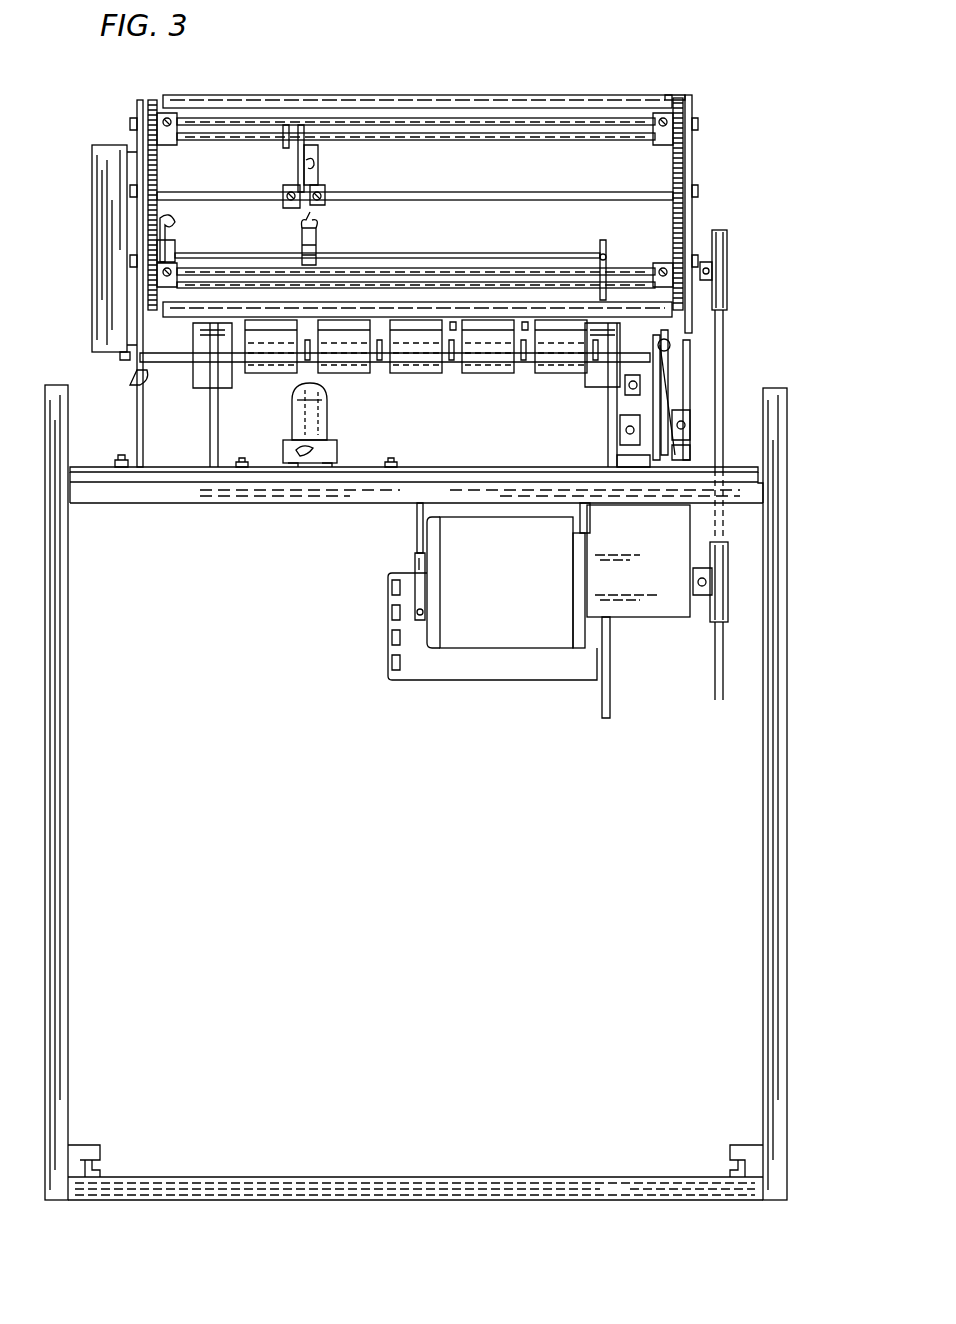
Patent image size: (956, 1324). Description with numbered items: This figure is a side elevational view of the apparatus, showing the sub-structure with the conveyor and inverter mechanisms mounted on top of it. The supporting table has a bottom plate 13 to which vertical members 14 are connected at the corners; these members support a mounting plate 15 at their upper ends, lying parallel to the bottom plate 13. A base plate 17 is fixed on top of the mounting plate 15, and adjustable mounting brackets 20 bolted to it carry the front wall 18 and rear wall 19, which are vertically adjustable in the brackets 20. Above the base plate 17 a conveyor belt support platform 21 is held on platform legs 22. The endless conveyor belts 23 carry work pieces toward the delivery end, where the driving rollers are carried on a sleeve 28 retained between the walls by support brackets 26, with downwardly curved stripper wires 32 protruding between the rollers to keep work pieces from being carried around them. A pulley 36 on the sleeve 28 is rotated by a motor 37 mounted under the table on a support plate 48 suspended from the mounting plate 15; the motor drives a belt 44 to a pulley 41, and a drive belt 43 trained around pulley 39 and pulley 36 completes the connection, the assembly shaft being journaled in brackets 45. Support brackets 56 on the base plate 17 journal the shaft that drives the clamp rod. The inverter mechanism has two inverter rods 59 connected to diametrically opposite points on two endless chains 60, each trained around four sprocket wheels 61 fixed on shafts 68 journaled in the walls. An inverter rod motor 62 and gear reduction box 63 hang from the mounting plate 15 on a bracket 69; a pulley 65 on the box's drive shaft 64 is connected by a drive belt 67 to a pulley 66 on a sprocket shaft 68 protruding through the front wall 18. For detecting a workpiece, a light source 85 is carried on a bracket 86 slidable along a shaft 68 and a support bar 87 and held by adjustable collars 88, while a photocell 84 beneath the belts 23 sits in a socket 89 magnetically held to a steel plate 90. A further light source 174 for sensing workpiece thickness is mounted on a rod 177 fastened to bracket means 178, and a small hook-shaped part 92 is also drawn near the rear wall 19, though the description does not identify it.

The bottom plate 13 is at (372, 1180).
The vertical members 14 is at (70, 955).
The mounting plate 15 is at (158, 503).
The base plate 17 is at (243, 478).
The front wall 18 is at (692, 165).
The rear wall 19 is at (137, 410).
The adjustable mounting brackets 20 is at (118, 460).
The conveyor belt support platform 21 is at (210, 352).
The platform legs 22 is at (210, 432).
The endless conveyor belts 23 is at (268, 375).
The support brackets 26 is at (137, 376).
The sleeve 28 is at (205, 355).
The stripper wires 32 is at (522, 362).
The pulley 36 is at (660, 350).
The motor 37 is at (508, 674).
The pulley 39 is at (690, 452).
The pulley 41 is at (620, 442).
The drive belt 43 is at (672, 400).
The belt 44 is at (617, 461).
The brackets 45 is at (690, 425).
The support plate 48 is at (610, 710).
The support brackets 56 is at (625, 402).
The inverter rods 59 is at (513, 96).
The endless chains 60 is at (158, 167).
The sprocket wheels 61 is at (680, 105).
The inverter rod motor 62 is at (516, 594).
The gear reduction box 63 is at (646, 584).
The drive shaft 64 is at (700, 595).
The pulley 65 is at (728, 605).
The pulley 66 is at (730, 250).
The drive belt 67 is at (668, 355).
The shafts 68 is at (585, 120).
The bracket 69 is at (417, 537).
The photocell 84 is at (320, 427).
The light source 85 is at (318, 172).
The bracket 86 is at (300, 150).
The support bar 87 is at (508, 194).
The adjustable collars 88 is at (325, 196).
The socket 89 is at (337, 460).
The steel plate 90 is at (260, 462).
The hook 92 is at (175, 250).
The light source 174 is at (316, 236).
The rod 177 is at (508, 255).
The bracket means 178 is at (598, 258).